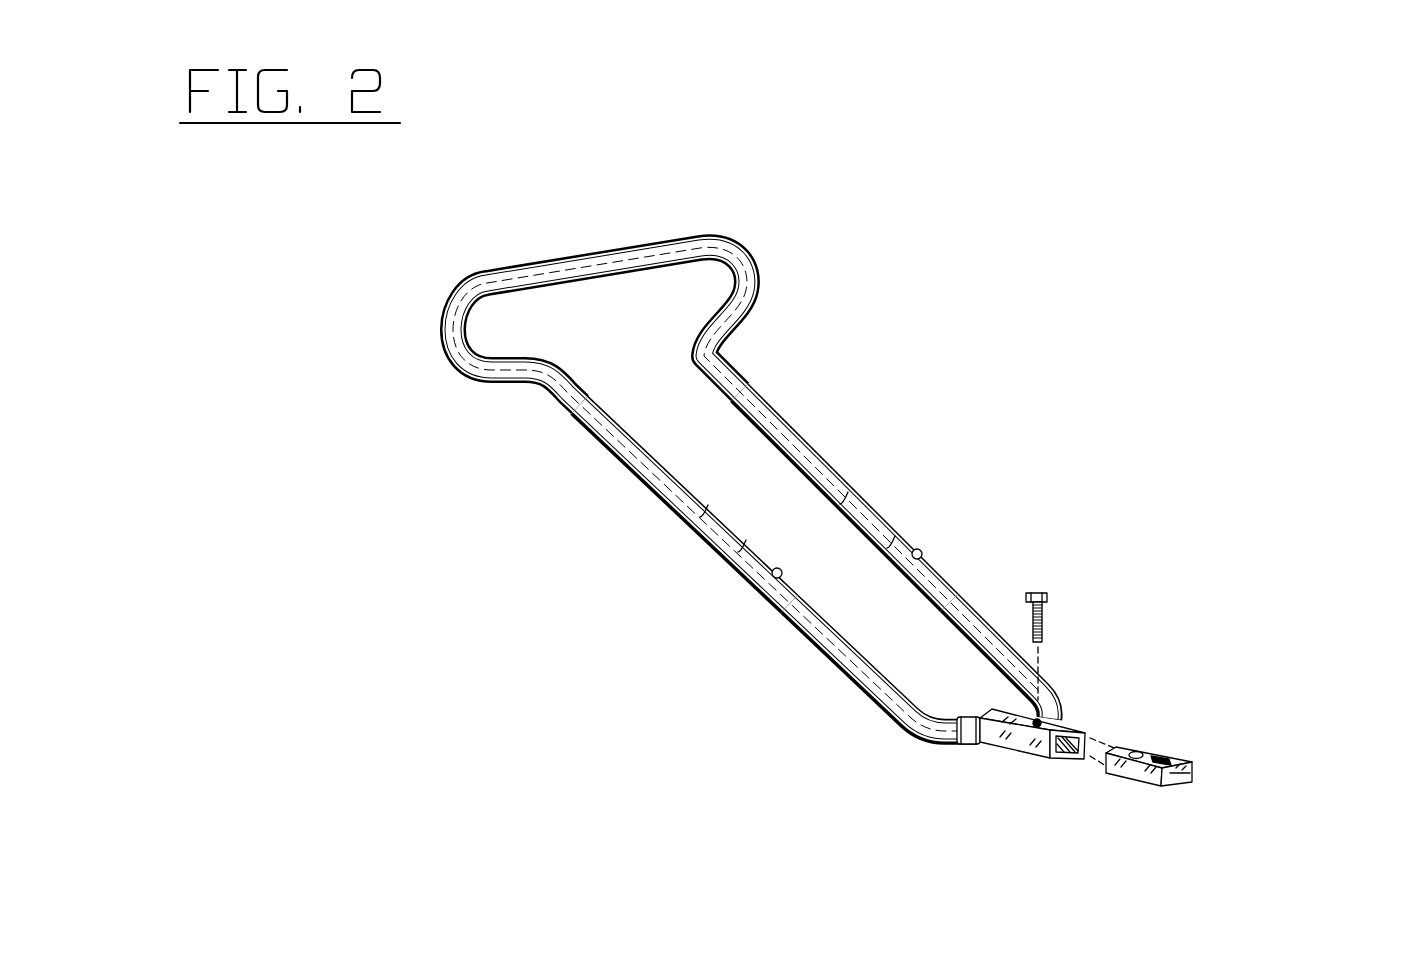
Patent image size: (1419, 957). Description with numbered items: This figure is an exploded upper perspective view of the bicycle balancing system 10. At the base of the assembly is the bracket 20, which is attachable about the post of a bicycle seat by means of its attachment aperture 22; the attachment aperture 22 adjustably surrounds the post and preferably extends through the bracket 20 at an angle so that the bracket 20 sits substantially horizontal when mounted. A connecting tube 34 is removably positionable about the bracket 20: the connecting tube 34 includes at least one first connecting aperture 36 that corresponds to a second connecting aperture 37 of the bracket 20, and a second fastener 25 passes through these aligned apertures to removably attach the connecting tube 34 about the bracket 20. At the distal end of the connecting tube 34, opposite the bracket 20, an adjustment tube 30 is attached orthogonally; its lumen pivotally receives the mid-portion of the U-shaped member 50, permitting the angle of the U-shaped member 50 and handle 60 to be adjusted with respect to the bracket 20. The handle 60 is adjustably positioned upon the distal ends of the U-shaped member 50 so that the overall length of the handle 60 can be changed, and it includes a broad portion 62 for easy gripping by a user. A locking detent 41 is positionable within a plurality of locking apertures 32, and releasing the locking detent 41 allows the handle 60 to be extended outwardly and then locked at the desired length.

The bicycle balancing system 10 is at (1052, 163).
The broad portion 62 is at (670, 257).
The handle 60 is at (768, 410).
The U-shaped member 50 is at (978, 633).
The locking apertures 32 is at (847, 494).
The locking detent 41 is at (922, 554).
The adjustment tube 30 is at (957, 744).
The first connecting aperture 36 is at (1010, 747).
The connecting tube 34 is at (1073, 724).
The second fastener 25 is at (1047, 620).
The bracket 20 is at (1216, 839).
The attachment aperture 22 is at (1168, 753).
The second connecting aperture 37 is at (1136, 758).